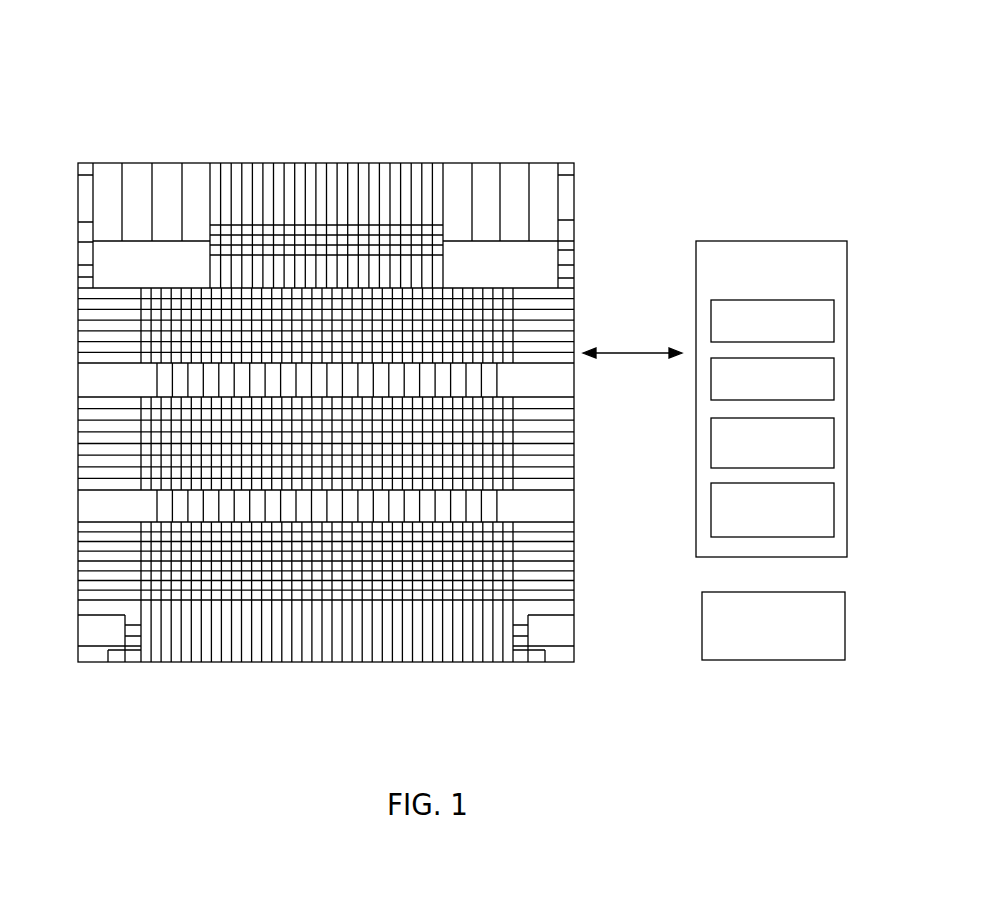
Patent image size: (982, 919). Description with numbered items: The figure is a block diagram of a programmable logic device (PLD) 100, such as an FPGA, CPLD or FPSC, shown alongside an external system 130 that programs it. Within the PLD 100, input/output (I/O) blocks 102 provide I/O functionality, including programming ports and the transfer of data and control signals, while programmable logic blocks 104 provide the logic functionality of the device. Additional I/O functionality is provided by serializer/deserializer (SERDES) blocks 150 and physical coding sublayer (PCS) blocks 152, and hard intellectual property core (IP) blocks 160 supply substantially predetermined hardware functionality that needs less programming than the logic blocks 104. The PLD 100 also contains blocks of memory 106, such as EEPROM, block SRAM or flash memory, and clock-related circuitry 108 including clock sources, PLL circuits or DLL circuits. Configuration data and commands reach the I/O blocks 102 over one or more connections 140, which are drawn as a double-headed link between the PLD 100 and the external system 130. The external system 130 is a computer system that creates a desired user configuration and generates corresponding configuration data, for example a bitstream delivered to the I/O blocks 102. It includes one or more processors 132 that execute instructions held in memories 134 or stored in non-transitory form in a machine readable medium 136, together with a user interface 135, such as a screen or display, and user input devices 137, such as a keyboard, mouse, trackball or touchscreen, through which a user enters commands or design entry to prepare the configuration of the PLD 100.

The programmable logic device 100 is at (192, 88).
The input/output blocks 102 is at (326, 412).
The logic blocks 104 is at (478, 457).
The blocks of memory 106 is at (478, 505).
The clock-related circuitry 108 is at (85, 225).
The external system 130 is at (829, 241).
The processors 132 is at (711, 302).
The memories 134 is at (711, 384).
The user interface 135 is at (711, 428).
The non-transitory machine readable mediums 136 is at (702, 637).
The user input devices 137 is at (711, 494).
The connections 140 is at (622, 351).
The serializer/deserializer blocks 150 is at (210, 160).
The physical coding sublayer blocks 152 is at (100, 253).
The hard intellectual property core blocks 160 is at (391, 442).